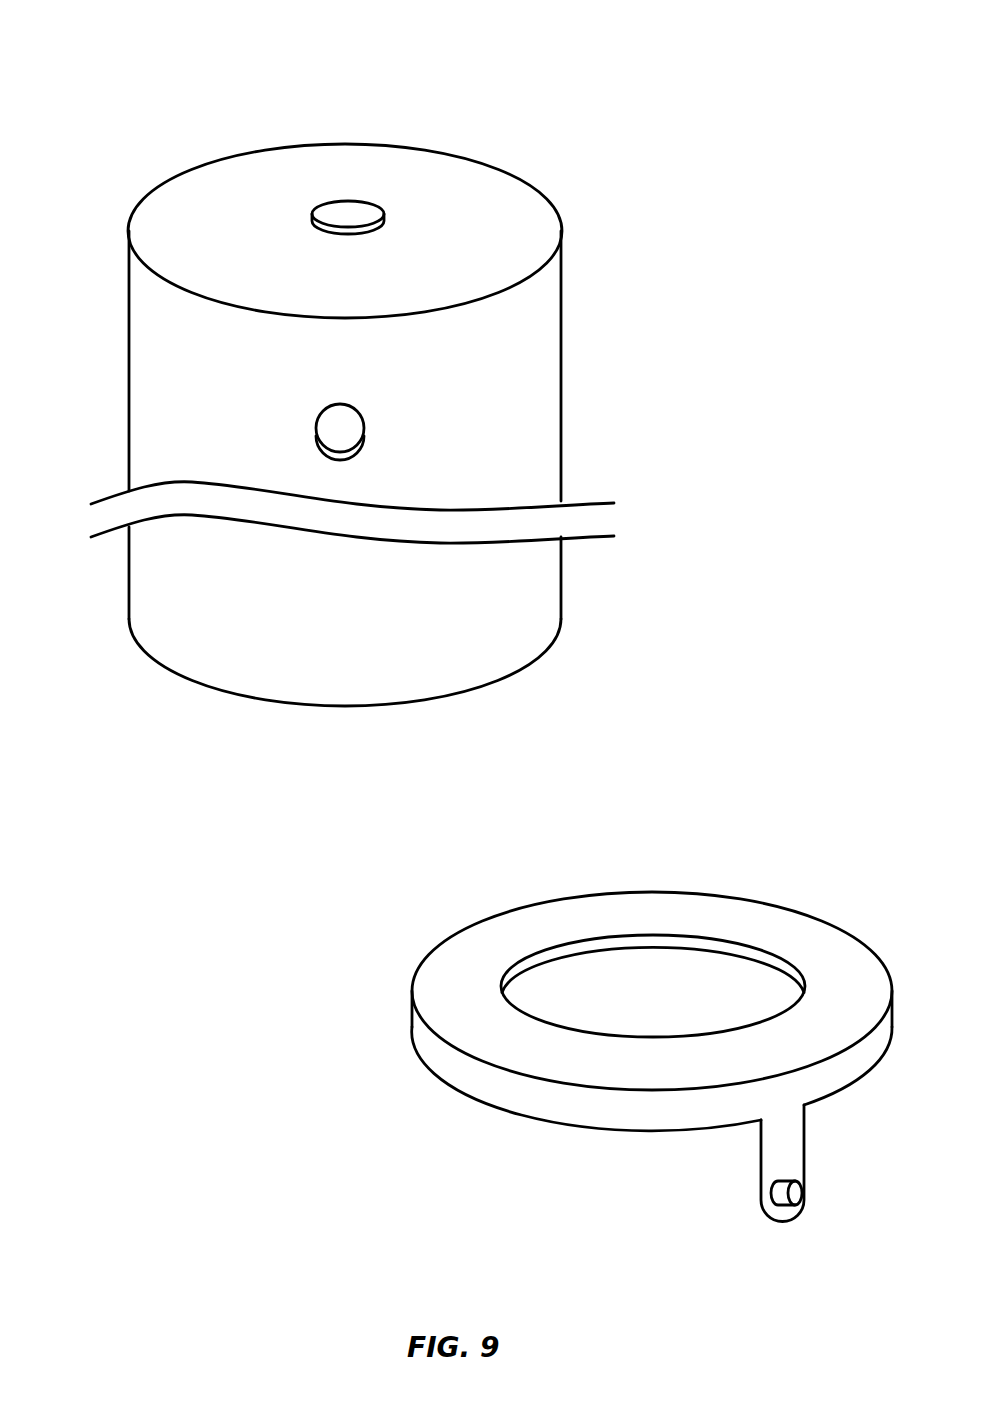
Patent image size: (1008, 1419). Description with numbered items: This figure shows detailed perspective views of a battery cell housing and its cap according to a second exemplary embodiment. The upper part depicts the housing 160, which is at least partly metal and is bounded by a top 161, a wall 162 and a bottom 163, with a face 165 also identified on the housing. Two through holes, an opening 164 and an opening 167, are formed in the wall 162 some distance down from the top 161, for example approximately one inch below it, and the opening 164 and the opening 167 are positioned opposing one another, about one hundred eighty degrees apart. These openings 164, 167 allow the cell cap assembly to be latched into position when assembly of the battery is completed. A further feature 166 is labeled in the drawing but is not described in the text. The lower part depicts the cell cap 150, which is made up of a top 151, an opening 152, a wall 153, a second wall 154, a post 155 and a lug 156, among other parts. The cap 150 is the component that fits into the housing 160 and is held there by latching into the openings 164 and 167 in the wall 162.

The cell cap 150 is at (753, 848).
The top 151 is at (757, 915).
The opening 152 is at (619, 977).
The wall 153 is at (521, 972).
The wall 154 is at (452, 1066).
The post 155 is at (778, 1130).
The lug 156 is at (802, 1194).
The housing 160 is at (517, 137).
The top 161 is at (503, 228).
The wall 162 is at (561, 452).
The bottom 163 is at (432, 702).
The opening 164 is at (363, 215).
The face 165 is at (313, 213).
The port opening 166 is at (330, 428).
The opening 167 is at (364, 418).